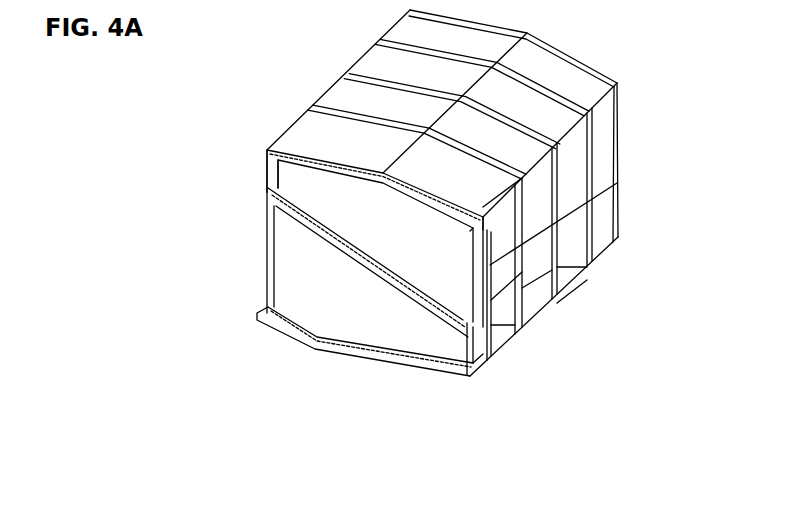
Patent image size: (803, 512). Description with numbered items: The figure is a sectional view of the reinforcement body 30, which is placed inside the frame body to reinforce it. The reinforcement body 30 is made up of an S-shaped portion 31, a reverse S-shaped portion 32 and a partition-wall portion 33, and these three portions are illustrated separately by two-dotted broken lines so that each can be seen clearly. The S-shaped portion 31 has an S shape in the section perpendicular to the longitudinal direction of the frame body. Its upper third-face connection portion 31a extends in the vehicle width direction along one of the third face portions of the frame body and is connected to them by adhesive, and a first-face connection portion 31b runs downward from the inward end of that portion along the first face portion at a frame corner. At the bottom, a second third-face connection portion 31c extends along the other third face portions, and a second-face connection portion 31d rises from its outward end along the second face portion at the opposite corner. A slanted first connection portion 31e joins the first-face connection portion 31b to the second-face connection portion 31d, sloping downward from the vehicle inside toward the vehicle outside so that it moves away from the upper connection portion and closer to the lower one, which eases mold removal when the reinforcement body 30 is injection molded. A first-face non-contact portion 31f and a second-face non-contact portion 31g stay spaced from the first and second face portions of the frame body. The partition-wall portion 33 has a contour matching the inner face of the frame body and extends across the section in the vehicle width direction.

The reinforcement body 30 is at (570, 50).
The S-shaped portion 31 is at (320, 92).
The third-face connection portion 31a is at (465, 216).
The first-face connection portion 31b is at (265, 184).
The second third-face connection portion 31c is at (350, 360).
The second-face connection portion 31d is at (487, 360).
The first connection portion 31e is at (345, 254).
The first-face non-contact portion 31f is at (258, 291).
The second-face non-contact portion 31g is at (452, 345).
The reverse S-shaped portion 32 is at (287, 118).
The partition-wall portion 33 is at (578, 271).